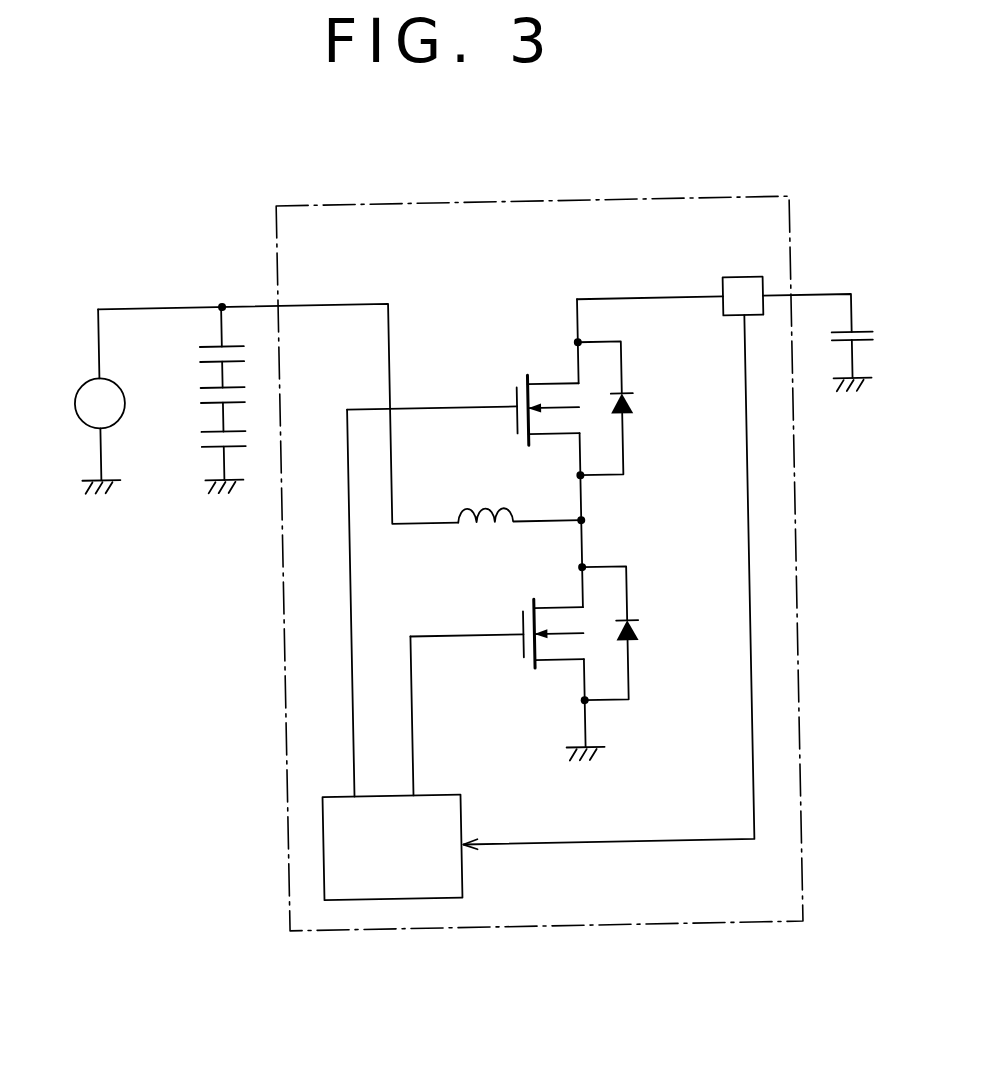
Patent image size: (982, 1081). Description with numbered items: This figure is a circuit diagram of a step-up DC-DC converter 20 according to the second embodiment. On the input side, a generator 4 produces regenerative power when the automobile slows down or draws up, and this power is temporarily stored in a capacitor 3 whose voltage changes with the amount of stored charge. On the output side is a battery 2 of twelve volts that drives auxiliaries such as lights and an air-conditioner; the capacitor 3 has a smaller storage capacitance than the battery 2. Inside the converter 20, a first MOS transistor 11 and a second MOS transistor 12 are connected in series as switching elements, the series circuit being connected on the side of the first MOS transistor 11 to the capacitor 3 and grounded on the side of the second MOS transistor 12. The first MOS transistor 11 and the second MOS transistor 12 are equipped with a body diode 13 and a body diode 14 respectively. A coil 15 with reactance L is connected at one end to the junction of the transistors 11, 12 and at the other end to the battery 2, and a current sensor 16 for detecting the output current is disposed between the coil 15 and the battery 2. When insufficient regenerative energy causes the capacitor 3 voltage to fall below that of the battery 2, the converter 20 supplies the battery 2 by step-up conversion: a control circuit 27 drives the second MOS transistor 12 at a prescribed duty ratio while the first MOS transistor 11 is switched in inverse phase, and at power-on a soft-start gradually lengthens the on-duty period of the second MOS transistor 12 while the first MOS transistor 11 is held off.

The battery 2 is at (866, 338).
The capacitor 3 is at (212, 441).
The generator 4 is at (79, 403).
The first MOS transistor 11 is at (518, 423).
The second MOS transistor 12 is at (519, 623).
The body diode 13 is at (646, 407).
The body diode 14 is at (644, 630).
The coil 15 is at (497, 532).
The current sensor 16 is at (747, 281).
The DC-DC converter 20 is at (592, 199).
The control circuit 27 is at (459, 866).